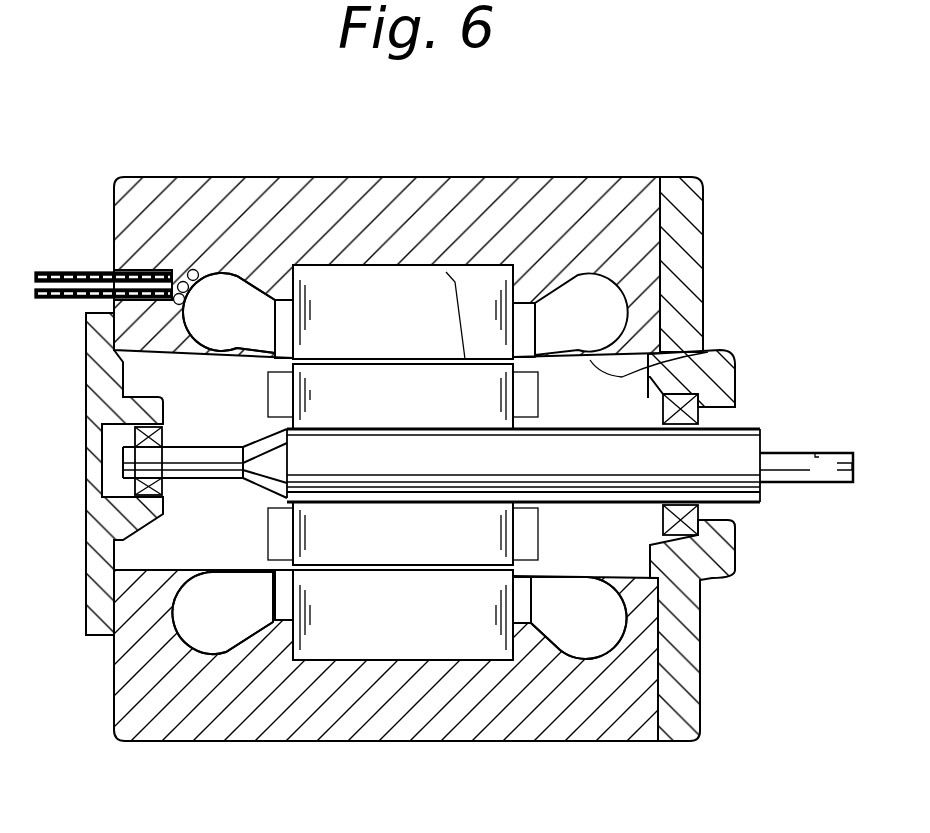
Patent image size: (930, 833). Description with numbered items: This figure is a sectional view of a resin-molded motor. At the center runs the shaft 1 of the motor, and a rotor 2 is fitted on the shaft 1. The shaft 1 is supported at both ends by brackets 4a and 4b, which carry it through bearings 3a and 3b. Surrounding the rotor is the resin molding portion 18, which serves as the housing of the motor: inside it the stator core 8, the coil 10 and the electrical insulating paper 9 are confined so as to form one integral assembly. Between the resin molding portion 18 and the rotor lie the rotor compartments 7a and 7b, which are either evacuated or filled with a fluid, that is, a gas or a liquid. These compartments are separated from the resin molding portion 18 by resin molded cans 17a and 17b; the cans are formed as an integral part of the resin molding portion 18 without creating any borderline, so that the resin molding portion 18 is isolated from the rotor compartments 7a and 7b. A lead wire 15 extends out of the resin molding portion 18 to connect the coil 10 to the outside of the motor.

The shaft 1 is at (710, 478).
The rotor 2 is at (395, 548).
The bearing 3a is at (733, 553).
The bearing 3b is at (135, 484).
The bracket 4a is at (708, 578).
The bracket 4b is at (97, 610).
The rotor compartment 7a is at (558, 550).
The rotor compartment 7b is at (170, 539).
The stator core 8 is at (332, 633).
The insulating paper 9 is at (285, 310).
The coil 10 is at (237, 300).
The lead wire 15 is at (87, 273).
The resin molded can 17a is at (446, 272).
The resin molded can 17b is at (708, 352).
The resin molding portion 18 is at (372, 213).